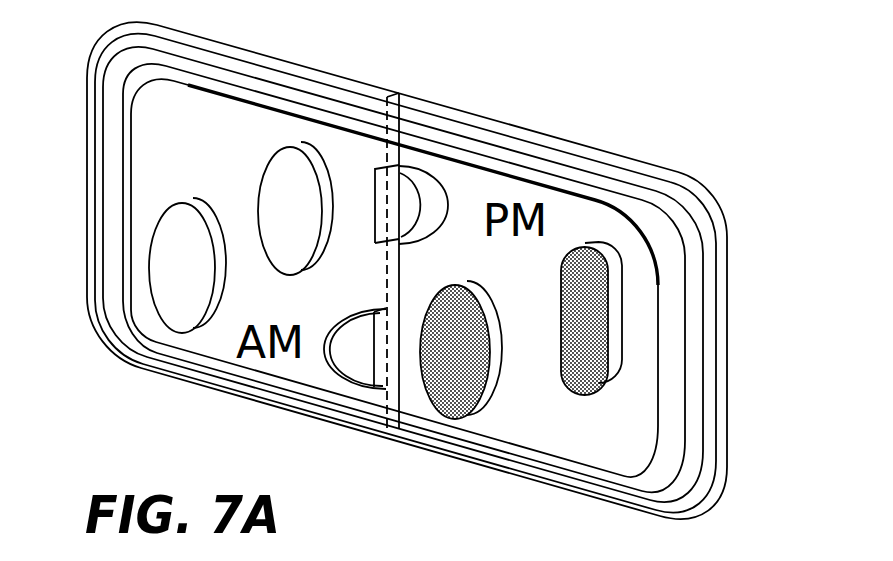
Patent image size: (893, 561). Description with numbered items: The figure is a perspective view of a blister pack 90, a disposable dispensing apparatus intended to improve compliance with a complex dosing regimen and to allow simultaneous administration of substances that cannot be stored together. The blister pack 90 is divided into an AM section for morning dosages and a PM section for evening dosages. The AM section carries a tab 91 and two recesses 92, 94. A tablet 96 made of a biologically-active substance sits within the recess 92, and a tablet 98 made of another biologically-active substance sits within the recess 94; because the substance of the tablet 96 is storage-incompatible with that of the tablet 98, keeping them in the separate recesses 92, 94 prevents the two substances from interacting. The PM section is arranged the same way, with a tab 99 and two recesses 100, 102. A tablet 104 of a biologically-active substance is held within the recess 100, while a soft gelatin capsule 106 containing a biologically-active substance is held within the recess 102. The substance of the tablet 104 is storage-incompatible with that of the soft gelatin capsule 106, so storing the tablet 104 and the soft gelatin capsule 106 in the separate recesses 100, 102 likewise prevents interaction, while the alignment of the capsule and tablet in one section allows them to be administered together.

The blister pack 90 is at (610, 33).
The tab 91 is at (412, 193).
The recess 92 is at (153, 307).
The recess 94 is at (285, 167).
The tablet 96 is at (170, 253).
The tablet 98 is at (315, 157).
The tab 99 is at (352, 362).
The recess 100 is at (447, 410).
The recess 102 is at (590, 247).
The tablet 104 is at (487, 358).
The soft gelatin capsule 106 is at (608, 283).